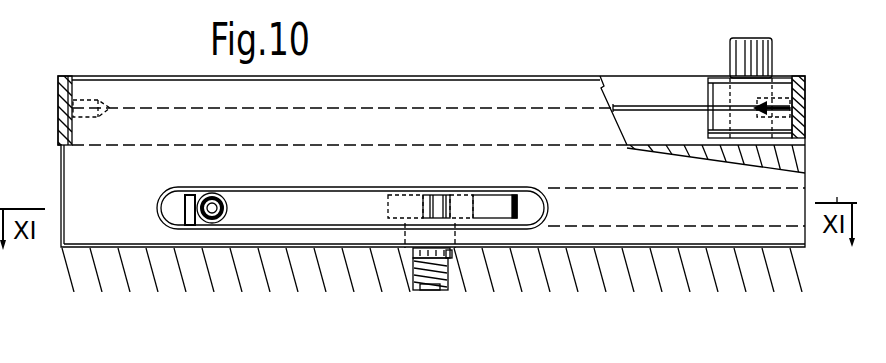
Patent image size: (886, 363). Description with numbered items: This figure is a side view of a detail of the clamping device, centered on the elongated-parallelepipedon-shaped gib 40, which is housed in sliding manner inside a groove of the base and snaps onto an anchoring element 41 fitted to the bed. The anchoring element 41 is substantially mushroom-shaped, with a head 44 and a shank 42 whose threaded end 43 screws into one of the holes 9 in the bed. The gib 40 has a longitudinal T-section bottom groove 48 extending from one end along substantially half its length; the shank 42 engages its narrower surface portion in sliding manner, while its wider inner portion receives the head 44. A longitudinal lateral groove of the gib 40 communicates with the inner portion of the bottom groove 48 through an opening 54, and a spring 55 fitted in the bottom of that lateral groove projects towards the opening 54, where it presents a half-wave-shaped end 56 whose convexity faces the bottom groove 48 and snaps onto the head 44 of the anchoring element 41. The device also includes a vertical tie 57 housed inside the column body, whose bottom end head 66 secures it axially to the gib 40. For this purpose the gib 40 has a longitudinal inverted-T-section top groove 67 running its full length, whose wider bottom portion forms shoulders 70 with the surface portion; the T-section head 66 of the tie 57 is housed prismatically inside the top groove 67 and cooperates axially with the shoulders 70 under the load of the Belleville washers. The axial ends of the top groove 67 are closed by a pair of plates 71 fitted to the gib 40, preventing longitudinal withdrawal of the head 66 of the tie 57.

The hole 9 is at (442, 289).
The gib 40 is at (88, 227).
The anchoring element 41 is at (448, 255).
The shank 42 is at (405, 247).
The threaded end 43 is at (423, 288).
The head 44 is at (452, 183).
The bottom groove 48 is at (647, 190).
The opening 54 is at (423, 208).
The spring 55 is at (273, 215).
The half-wave-shaped end 56 is at (497, 206).
The tie 57 is at (733, 50).
The bottom end head 66 is at (723, 92).
The top groove 67 is at (659, 125).
The shoulders 70 is at (643, 117).
The plates 71 is at (60, 88).